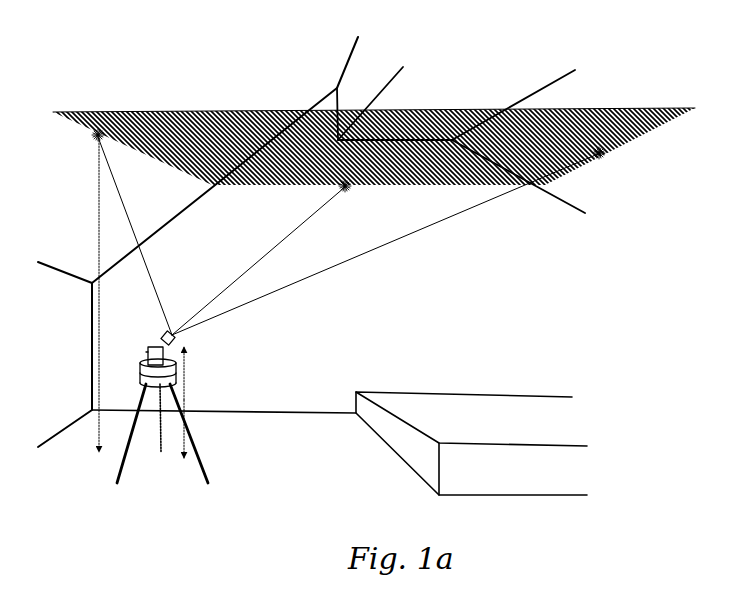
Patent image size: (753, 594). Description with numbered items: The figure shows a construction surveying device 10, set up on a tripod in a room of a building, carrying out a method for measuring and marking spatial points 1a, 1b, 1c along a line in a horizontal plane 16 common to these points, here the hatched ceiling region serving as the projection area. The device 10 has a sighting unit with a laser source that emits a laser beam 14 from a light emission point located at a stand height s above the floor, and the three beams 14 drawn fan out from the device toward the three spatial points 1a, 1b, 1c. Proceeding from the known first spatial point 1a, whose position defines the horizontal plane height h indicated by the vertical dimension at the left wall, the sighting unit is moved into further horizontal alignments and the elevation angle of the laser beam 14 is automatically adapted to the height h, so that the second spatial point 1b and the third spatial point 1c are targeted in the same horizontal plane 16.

The first spatial point 1a is at (64, 151).
The second spatial point 1b is at (369, 197).
The third spatial point 1c is at (633, 173).
The construction surveying device 10 is at (129, 404).
The laser beam 14 is at (348, 236).
The horizontal plane 16 is at (374, 131).
The horizontal plane height h is at (73, 296).
The stand height s is at (205, 402).